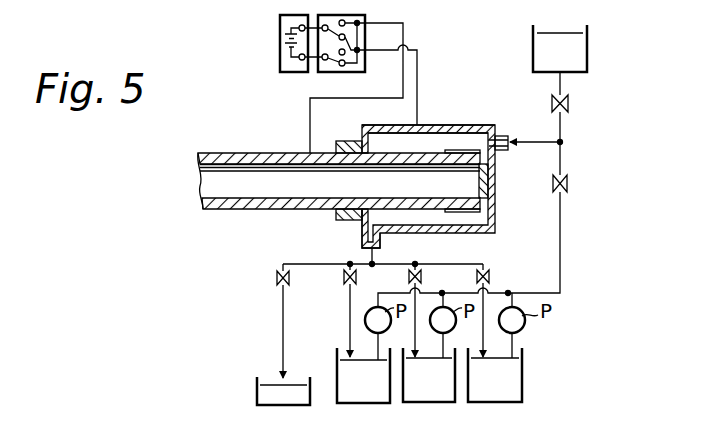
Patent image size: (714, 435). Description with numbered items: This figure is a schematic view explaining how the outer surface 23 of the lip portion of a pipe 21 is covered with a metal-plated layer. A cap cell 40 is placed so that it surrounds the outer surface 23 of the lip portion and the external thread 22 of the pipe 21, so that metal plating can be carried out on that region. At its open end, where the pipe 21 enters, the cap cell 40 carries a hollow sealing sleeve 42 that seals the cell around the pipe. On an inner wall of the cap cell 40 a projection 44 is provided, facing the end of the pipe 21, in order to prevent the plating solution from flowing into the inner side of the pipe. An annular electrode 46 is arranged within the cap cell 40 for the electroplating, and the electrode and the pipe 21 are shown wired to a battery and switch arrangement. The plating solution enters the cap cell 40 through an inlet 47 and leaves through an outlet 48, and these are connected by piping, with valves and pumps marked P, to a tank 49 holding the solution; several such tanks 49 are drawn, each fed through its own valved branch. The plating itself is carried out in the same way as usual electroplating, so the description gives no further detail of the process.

The pipe 21 is at (225, 152).
The external thread 22 is at (405, 148).
The outer surface of the lip portion 23 is at (472, 150).
The cap cell 40 is at (494, 233).
The hollow sealing sleeve 42 is at (337, 213).
The projection 44 is at (490, 183).
The annular electrode 46 is at (445, 125).
The inlet 47 is at (503, 152).
The outlet 48 is at (362, 238).
The tank 49 is at (577, 63).